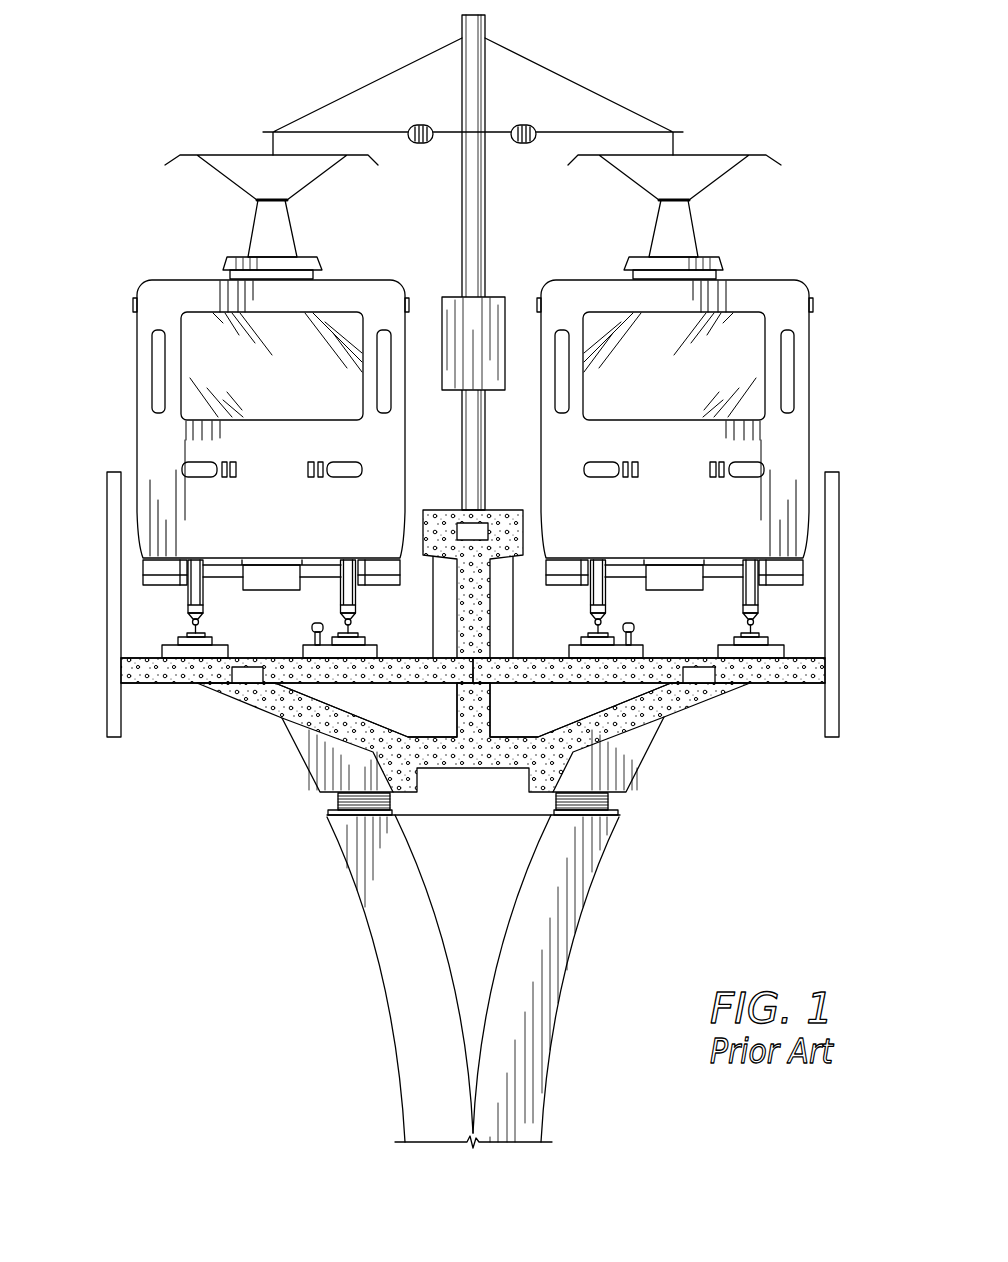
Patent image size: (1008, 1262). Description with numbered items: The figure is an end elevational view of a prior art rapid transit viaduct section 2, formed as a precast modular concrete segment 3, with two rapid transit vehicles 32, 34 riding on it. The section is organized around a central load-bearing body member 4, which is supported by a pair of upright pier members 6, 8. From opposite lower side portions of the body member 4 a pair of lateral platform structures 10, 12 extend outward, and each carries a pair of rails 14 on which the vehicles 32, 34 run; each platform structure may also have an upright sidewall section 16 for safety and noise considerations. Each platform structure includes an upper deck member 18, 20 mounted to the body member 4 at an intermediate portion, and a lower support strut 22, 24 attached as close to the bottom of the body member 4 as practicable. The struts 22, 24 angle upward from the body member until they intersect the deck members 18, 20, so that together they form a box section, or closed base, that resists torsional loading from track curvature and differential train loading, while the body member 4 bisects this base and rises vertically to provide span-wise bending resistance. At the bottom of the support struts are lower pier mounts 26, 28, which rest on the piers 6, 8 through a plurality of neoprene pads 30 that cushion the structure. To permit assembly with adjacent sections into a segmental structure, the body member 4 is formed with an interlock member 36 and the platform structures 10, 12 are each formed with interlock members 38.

The rapid transit viaduct section 2 is at (178, 748).
The concrete segment 3 is at (677, 707).
The body member 4 is at (493, 510).
The pier member 6 is at (397, 1018).
The pier member 8 is at (565, 980).
The lateral platform structure 10 is at (277, 740).
The lateral platform structure 12 is at (687, 755).
The rails 14 is at (195, 628).
The upright sidewall section 16 is at (110, 727).
The deck member 18 is at (422, 657).
The deck member 20 is at (530, 658).
The lower support strut 22 is at (363, 718).
The lower support strut 24 is at (583, 720).
The lower pier mount 26 is at (320, 790).
The lower pier mount 28 is at (628, 790).
The neoprene pads 30 is at (348, 812).
The rapid transit vehicle 32 is at (183, 278).
The rapid transit vehicle 34 is at (763, 278).
The interlock member 36 is at (470, 532).
The interlock members 38 is at (235, 683).